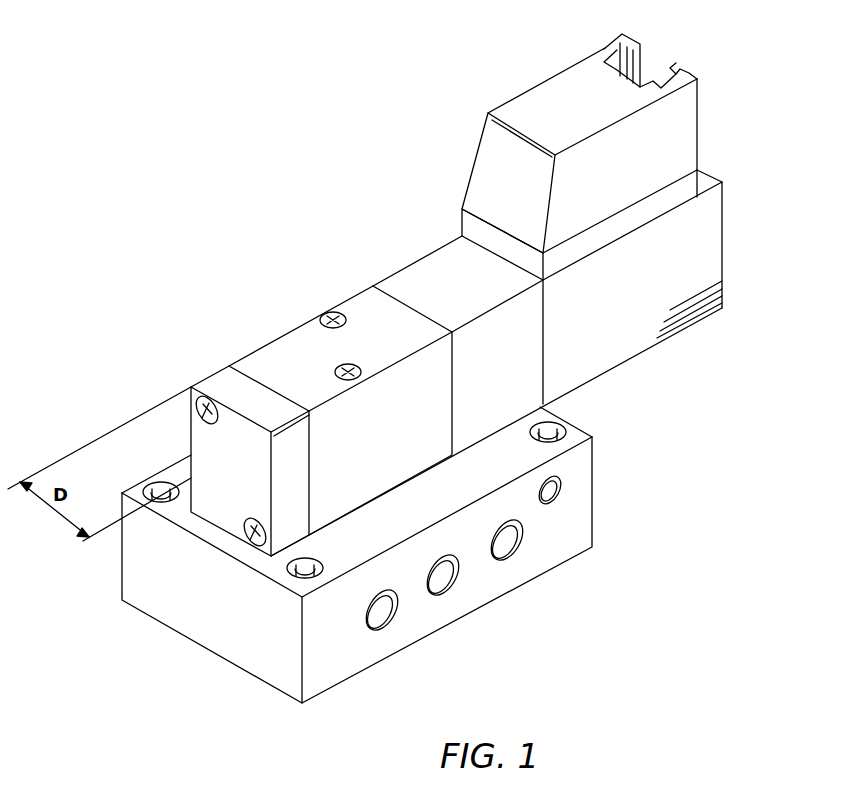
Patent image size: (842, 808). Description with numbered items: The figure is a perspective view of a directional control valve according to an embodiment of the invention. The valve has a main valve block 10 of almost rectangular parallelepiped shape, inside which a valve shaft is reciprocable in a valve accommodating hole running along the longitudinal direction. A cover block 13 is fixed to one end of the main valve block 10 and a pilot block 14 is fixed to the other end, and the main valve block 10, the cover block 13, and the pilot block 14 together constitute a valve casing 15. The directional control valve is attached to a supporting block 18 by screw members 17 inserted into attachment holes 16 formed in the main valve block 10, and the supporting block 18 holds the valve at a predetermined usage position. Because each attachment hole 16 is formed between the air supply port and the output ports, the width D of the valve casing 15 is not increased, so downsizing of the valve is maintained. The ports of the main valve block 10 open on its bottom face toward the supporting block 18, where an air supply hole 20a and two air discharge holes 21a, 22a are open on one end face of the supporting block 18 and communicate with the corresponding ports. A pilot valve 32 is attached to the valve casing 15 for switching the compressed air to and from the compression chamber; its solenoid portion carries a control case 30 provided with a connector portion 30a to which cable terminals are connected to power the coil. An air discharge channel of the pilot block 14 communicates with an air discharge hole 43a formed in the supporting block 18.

The main valve block 10 is at (267, 355).
The cover block 13 is at (222, 380).
The pilot block 14 is at (447, 265).
The valve casing 15 is at (357, 282).
The attachment hole 16 is at (340, 312).
The screw member 17 is at (320, 316).
The supporting block 18 is at (334, 662).
The air supply hole 20a is at (447, 596).
The air discharge hole 21a is at (518, 553).
The air discharge hole 22a is at (388, 632).
The control case 30 is at (560, 85).
The connector portion 30a is at (640, 53).
The pilot valve 32 is at (712, 247).
The air discharge hole 43a is at (563, 497).